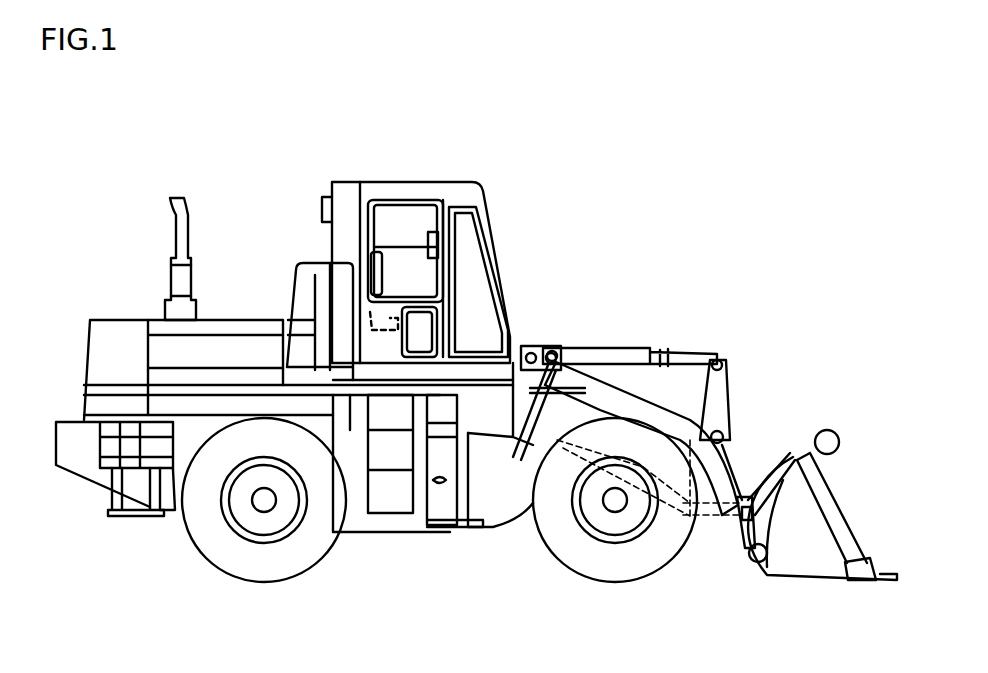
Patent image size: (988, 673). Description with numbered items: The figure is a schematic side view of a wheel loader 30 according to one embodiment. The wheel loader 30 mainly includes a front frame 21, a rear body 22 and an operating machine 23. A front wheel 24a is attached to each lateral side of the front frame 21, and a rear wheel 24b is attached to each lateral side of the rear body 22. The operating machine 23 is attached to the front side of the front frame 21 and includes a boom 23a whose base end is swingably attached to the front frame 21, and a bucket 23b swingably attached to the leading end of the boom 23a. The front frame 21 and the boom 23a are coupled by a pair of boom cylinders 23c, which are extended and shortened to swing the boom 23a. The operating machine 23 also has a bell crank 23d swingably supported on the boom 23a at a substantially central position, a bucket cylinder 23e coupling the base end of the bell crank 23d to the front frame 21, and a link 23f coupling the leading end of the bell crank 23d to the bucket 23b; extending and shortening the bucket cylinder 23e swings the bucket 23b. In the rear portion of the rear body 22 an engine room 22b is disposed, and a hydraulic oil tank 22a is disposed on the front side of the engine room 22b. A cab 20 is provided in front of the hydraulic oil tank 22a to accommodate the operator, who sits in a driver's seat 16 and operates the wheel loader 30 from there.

The driver's seat 16 is at (382, 278).
The cab 20 is at (417, 240).
The front frame 21 is at (507, 500).
The rear body 22 is at (174, 488).
The hydraulic oil tank 22a is at (300, 335).
The engine room 22b is at (160, 345).
The operating machine 23 is at (715, 437).
The boom 23a is at (622, 402).
The bucket 23b is at (818, 532).
The boom cylinder 23c is at (561, 346).
The bell crank 23d is at (718, 393).
The bucket cylinder 23e is at (613, 348).
The link 23f is at (742, 500).
The front wheel 24a is at (616, 573).
The rear wheel 24b is at (267, 572).
The wheel loader 30 is at (639, 142).